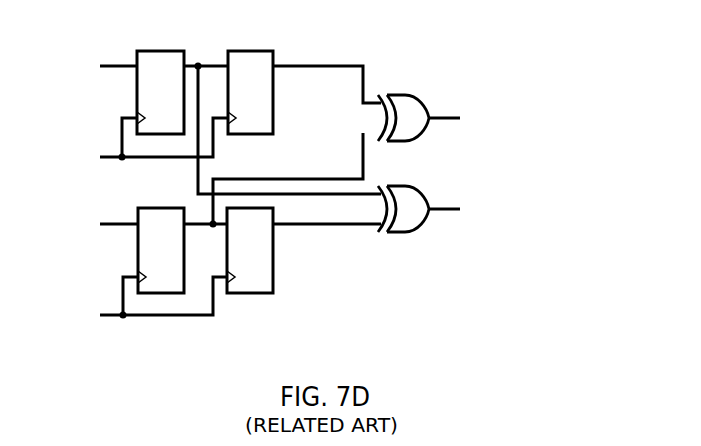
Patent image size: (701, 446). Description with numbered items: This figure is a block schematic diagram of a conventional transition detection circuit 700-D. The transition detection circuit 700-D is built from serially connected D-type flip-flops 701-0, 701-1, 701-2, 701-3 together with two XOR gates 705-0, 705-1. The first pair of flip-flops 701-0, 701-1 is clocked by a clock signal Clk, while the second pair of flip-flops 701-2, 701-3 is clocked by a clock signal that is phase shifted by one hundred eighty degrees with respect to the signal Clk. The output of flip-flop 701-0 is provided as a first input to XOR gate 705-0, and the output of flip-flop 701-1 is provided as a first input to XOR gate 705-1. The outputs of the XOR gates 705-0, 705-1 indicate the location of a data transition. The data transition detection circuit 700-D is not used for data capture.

The transition detection circuit 700-D is at (420, 42).
The D-type flip-flop 701-0 is at (160, 92).
The D-type flip-flop 701-1 is at (250, 92).
The D-type flip-flop 701-2 is at (161, 250).
The D-type flip-flop 701-3 is at (250, 250).
The XOR gate 705-0 is at (410, 131).
The XOR gate 705-1 is at (410, 222).